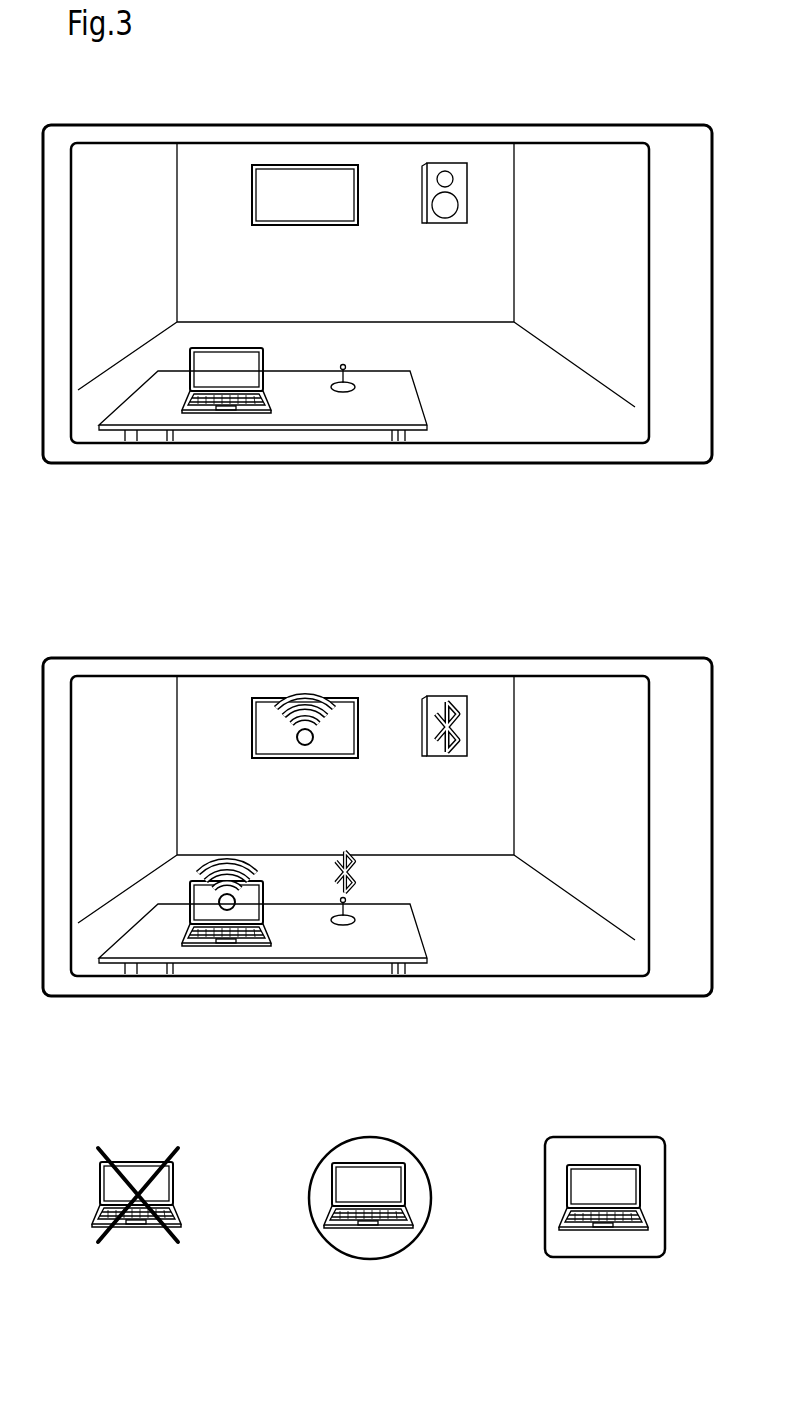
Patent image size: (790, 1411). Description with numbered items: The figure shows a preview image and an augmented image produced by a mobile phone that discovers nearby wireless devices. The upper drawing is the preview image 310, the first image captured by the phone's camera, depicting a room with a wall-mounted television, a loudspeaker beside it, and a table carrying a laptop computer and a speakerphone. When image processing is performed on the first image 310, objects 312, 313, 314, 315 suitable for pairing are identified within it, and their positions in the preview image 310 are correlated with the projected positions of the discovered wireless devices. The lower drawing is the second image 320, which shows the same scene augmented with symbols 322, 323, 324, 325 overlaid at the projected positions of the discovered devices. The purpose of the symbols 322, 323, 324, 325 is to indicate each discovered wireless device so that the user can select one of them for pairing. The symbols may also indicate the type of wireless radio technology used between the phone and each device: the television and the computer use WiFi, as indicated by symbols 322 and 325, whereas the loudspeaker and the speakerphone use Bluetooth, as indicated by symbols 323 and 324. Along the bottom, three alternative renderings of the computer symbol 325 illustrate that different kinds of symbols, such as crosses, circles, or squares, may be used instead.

The preview image 310 is at (586, 167).
The object suitable for pairing 312 is at (307, 180).
The object suitable for pairing 313 is at (462, 172).
The object suitable for pairing 314 is at (350, 388).
The object suitable for pairing 315 is at (228, 371).
The second image 320 is at (586, 700).
The symbol 322 is at (303, 716).
The symbol 323 is at (452, 703).
The symbol 324 is at (350, 921).
The symbol 325 is at (228, 904).